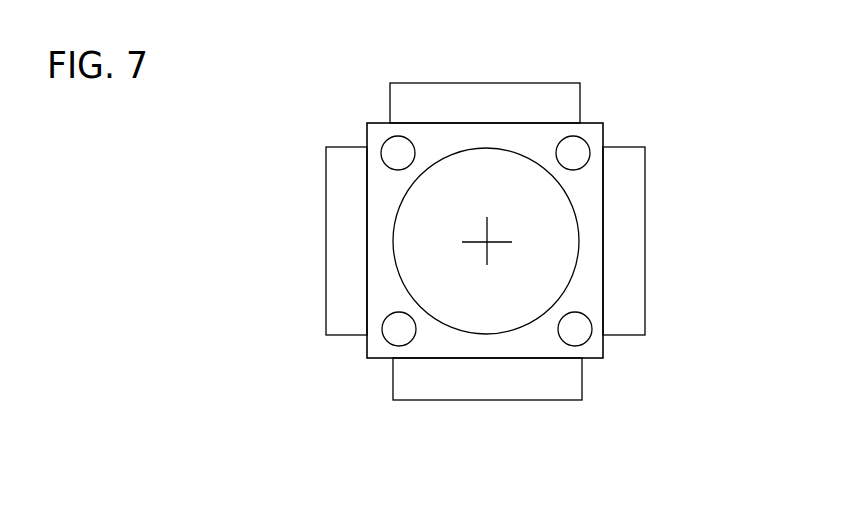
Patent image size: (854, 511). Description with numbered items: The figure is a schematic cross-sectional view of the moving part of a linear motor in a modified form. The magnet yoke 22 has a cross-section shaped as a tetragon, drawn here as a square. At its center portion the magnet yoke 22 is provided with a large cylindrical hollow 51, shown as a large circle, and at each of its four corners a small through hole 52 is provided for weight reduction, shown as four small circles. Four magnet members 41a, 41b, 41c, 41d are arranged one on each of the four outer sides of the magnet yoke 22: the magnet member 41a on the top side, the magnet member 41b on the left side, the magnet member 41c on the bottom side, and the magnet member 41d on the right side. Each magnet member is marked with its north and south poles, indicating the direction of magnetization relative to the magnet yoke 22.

The magnet yoke 22 is at (530, 137).
The magnet member 41a is at (435, 94).
The magnet member 41b is at (337, 198).
The magnet member 41c is at (436, 387).
The magnet member 41d is at (632, 280).
The large cylindrical hollow 51 is at (542, 310).
The small through hole 52 is at (400, 139).